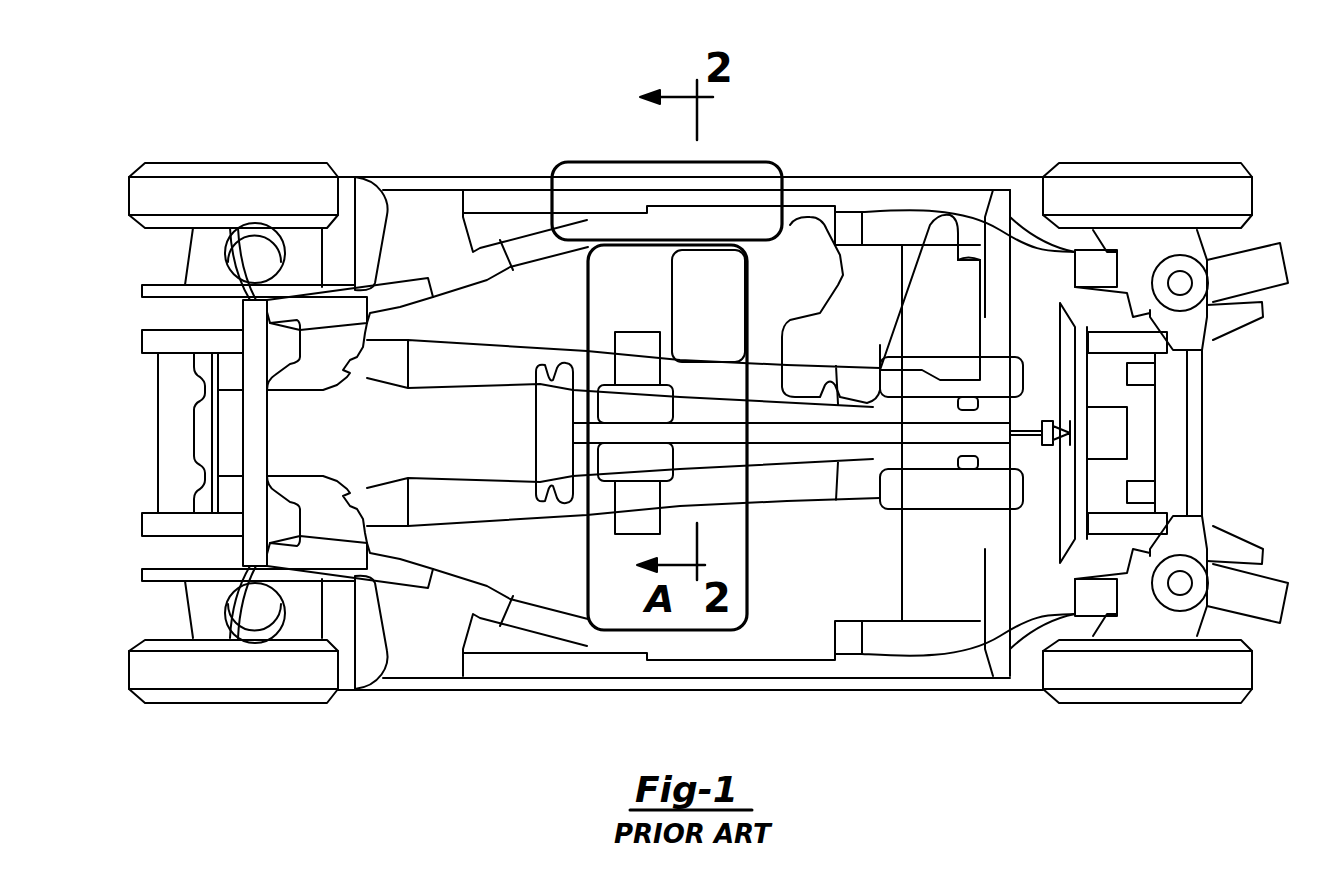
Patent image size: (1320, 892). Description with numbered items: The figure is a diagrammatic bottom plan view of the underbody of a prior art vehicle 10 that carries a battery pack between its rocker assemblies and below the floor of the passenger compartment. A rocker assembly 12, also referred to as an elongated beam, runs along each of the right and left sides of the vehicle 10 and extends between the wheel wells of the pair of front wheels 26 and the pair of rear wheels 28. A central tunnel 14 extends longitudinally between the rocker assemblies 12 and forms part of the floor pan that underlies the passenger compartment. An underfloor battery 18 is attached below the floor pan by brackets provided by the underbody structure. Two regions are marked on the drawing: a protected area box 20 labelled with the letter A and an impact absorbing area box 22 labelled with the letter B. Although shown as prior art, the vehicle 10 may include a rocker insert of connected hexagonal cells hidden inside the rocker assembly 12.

The vehicle 10 is at (990, 92).
The rocker assembly 12 is at (834, 184).
The central tunnel 14 is at (787, 450).
The underfloor battery 18 is at (963, 305).
The protected area box 20 is at (602, 562).
The impact absorbing area box 22 is at (610, 170).
The front wheels 26 is at (238, 703).
The rear wheels 28 is at (1150, 703).